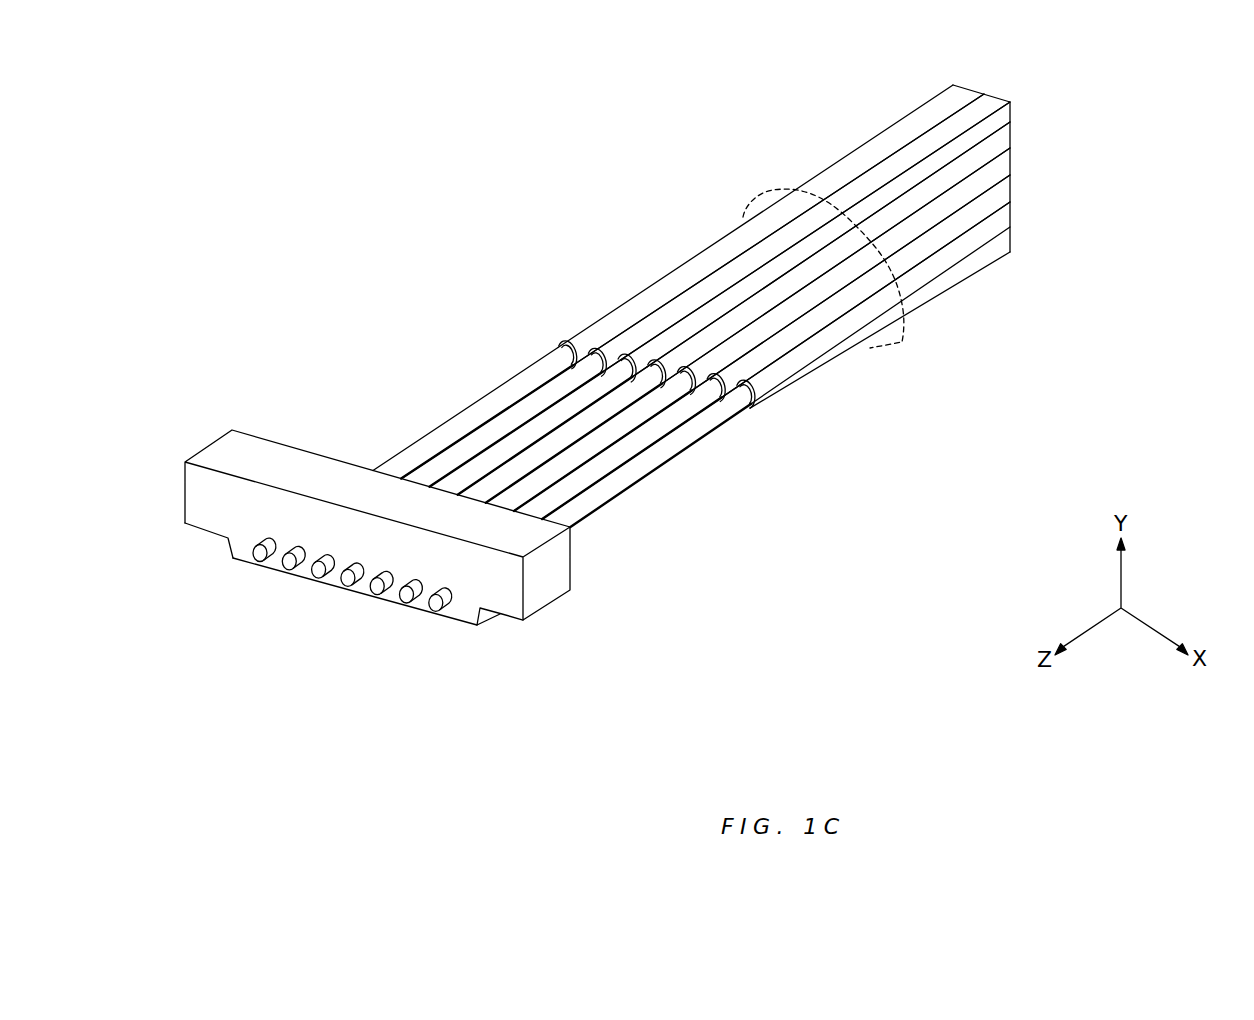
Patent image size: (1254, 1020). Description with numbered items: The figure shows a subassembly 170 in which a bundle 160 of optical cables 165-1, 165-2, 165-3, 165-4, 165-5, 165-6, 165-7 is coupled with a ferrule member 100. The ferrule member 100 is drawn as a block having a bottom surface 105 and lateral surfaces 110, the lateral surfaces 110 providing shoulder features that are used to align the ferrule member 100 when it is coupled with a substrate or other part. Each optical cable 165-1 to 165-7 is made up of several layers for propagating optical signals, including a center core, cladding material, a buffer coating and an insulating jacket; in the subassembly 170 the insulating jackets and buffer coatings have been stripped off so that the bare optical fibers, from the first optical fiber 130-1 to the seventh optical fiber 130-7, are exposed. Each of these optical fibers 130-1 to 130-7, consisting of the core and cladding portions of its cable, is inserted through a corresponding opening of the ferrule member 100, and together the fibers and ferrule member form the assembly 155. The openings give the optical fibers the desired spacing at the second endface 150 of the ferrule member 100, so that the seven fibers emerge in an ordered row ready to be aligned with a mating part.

The ferrule member 100 is at (419, 513).
The bottom surface 105 is at (390, 606).
The lateral surfaces 110 is at (203, 532).
The optical fiber 130-1 is at (486, 402).
The optical fiber 130-7 is at (653, 468).
The second endface 150 is at (333, 554).
The assembly 155 is at (288, 607).
The bundle 160 is at (902, 344).
The optical cable assembly 165-1 is at (919, 114).
The optical cable assembly 165-2 is at (987, 98).
The optical cable assembly 165-3 is at (1003, 116).
The optical cable assembly 165-4 is at (1004, 144).
The optical cable assembly 165-5 is at (1005, 175).
The optical cable assembly 165-6 is at (1004, 202).
The optical cable assembly 165-7 is at (1004, 243).
The subassembly 170 is at (769, 228).